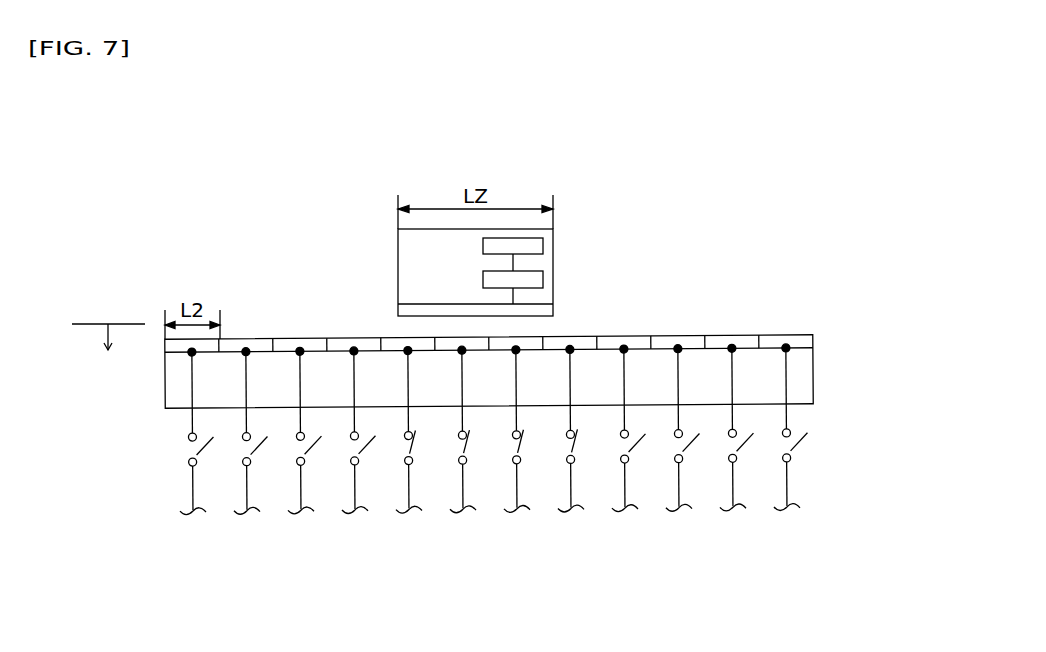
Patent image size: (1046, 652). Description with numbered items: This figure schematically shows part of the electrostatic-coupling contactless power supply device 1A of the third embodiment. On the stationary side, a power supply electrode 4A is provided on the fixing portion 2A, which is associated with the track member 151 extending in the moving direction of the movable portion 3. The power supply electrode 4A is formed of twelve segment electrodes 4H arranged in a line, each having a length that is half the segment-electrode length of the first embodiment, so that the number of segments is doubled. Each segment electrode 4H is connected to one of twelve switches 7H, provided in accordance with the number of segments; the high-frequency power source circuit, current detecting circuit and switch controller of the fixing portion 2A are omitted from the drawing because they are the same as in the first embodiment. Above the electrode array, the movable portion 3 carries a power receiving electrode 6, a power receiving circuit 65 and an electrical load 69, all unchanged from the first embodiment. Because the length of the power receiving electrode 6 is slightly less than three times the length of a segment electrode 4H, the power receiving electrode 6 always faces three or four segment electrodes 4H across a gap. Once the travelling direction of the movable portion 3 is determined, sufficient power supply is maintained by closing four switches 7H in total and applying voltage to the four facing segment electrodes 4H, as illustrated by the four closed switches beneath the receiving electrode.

The electrostatic-coupling contactless power supply device 1A is at (176, 141).
The fixing portion 2A is at (107, 361).
The movable portion 3 is at (413, 269).
The power supply electrode 4A is at (167, 304).
The segment electrode 4H is at (247, 339).
The power receiving electrode 6 is at (410, 309).
The switch 7H is at (262, 440).
The power receiving circuit 65 is at (535, 278).
The electrical load 69 is at (530, 246).
The track member 151 is at (805, 367).